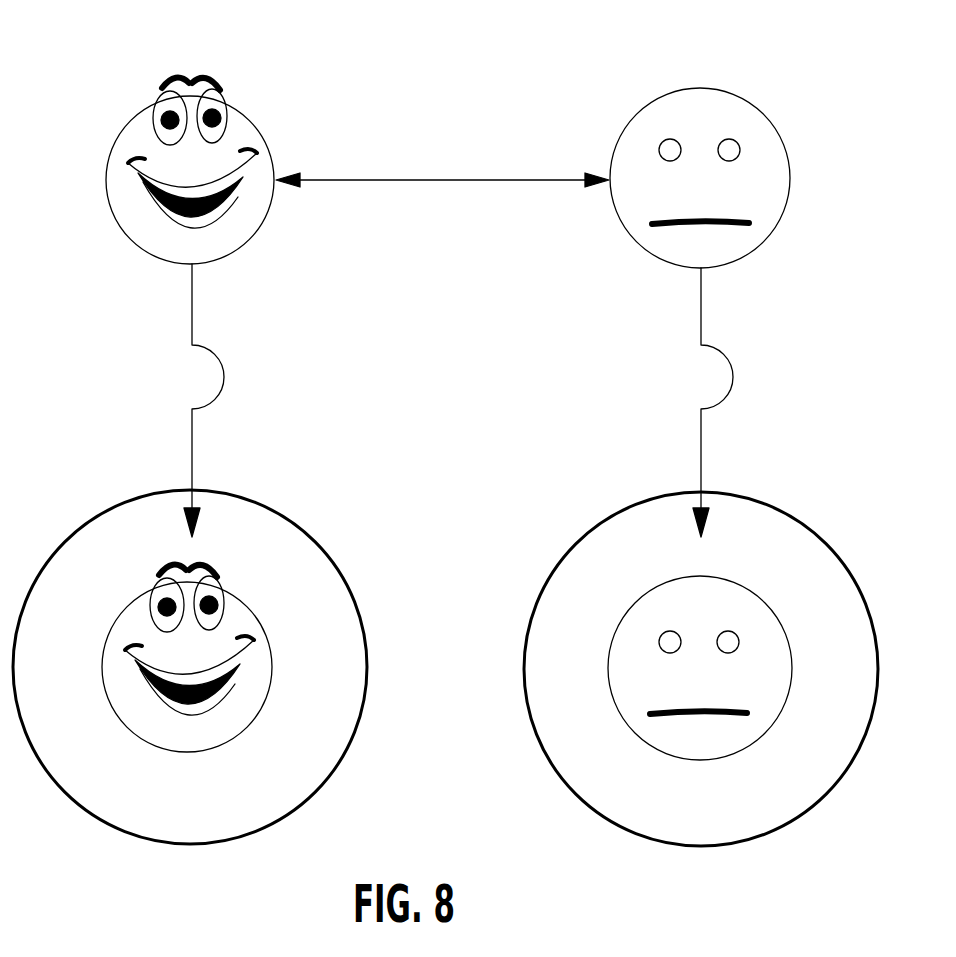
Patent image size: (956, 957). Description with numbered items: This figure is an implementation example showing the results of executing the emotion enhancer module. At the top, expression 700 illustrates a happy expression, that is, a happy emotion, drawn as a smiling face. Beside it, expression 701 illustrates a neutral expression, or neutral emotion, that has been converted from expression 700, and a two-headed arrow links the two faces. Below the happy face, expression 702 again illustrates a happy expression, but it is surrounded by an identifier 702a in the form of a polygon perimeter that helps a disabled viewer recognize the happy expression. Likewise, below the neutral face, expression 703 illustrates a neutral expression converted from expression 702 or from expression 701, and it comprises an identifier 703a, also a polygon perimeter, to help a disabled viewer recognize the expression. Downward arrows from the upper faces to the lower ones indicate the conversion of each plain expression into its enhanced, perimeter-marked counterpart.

The expression 700 is at (143, 108).
The expression 701 is at (645, 102).
The identifier 702a is at (83, 527).
The expression 702 is at (120, 797).
The identifier 703a is at (600, 522).
The expression 703 is at (632, 797).